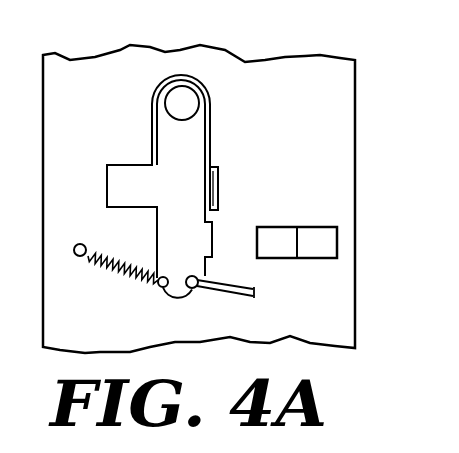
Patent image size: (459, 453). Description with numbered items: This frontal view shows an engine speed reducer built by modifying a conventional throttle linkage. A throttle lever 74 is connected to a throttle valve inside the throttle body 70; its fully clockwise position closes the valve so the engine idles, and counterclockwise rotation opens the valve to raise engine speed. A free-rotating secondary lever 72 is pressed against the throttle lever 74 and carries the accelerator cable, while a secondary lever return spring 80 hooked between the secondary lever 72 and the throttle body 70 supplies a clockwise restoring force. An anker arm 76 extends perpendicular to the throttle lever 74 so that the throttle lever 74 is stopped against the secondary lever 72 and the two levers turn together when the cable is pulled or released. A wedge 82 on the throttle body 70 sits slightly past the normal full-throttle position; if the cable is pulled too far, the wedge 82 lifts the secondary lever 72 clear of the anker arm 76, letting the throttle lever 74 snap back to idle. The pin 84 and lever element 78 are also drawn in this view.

The throttle body 70 is at (332, 153).
The secondary lever 72 is at (127, 182).
The throttle lever 74 is at (213, 145).
The anker arm 76 is at (218, 195).
The lever 78 is at (230, 296).
The secondary lever return spring 80 is at (113, 270).
The wedge 82 is at (320, 242).
The roller 84 is at (183, 104).